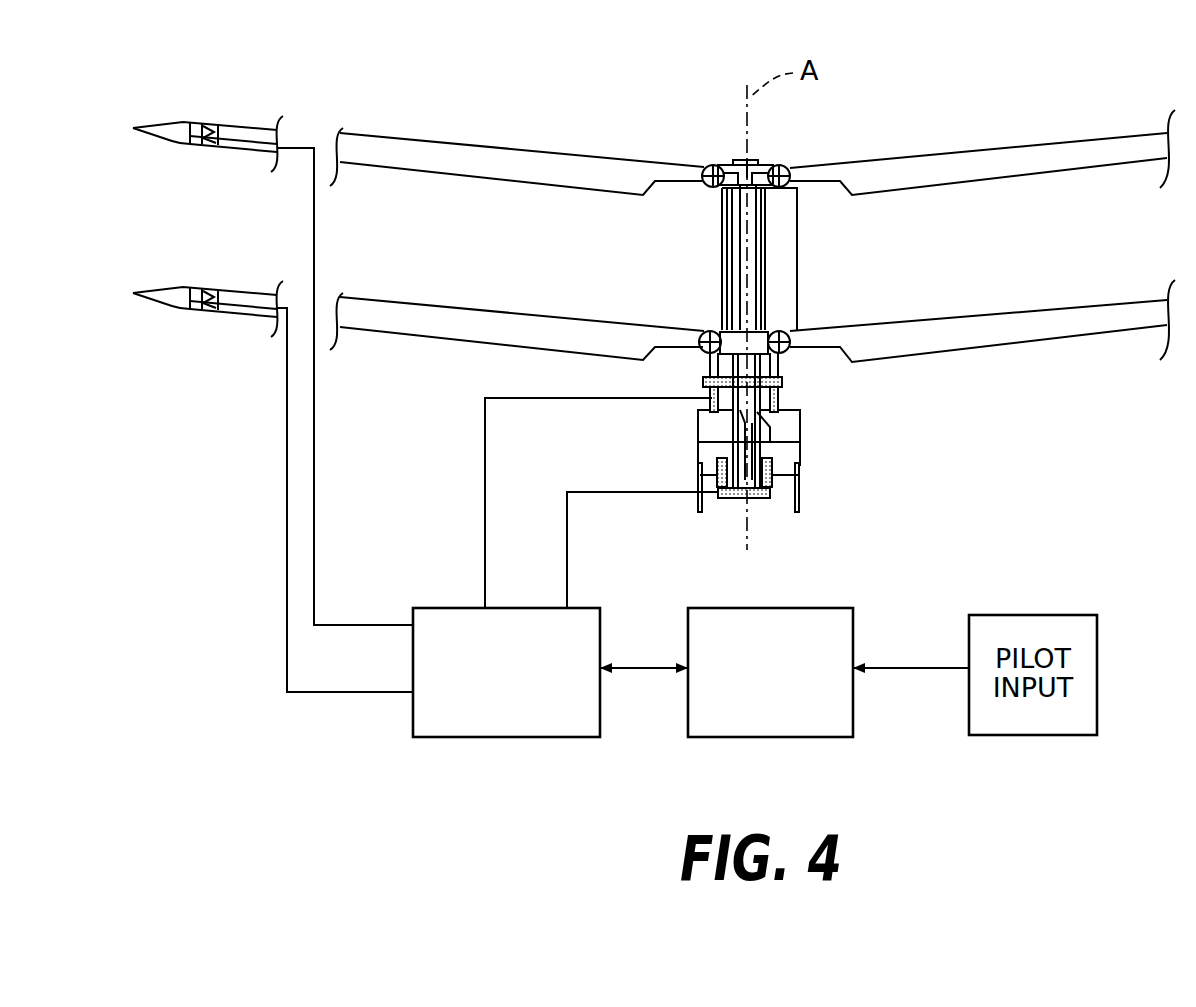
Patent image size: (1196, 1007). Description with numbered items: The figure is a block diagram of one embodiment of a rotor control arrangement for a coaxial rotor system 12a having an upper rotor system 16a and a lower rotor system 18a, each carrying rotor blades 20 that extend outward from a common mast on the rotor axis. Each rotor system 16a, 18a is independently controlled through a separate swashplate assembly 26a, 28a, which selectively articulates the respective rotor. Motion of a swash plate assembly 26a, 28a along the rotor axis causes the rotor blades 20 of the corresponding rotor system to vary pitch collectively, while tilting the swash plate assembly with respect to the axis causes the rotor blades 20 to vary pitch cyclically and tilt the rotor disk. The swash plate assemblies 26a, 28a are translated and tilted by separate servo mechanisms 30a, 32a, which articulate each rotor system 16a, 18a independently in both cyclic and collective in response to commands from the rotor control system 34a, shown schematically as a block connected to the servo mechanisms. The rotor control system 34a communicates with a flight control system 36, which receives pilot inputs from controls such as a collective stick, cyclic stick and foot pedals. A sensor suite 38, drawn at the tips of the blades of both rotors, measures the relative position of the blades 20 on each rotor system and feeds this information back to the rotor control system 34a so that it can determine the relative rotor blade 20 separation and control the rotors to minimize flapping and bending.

The coaxial rotor system 12a is at (1102, 102).
The rotor system 16a is at (826, 142).
The rotor system 18a is at (826, 288).
The rotor blades 20 is at (1082, 162).
The swashplate assembly 26a is at (771, 495).
The swashplate assembly 28a is at (783, 380).
The servo mechanism 30a is at (780, 401).
The servo mechanism 32a is at (772, 471).
The rotor control system 34a is at (602, 607).
The flight control system 36 is at (838, 611).
The sensor suite 38 is at (207, 124).